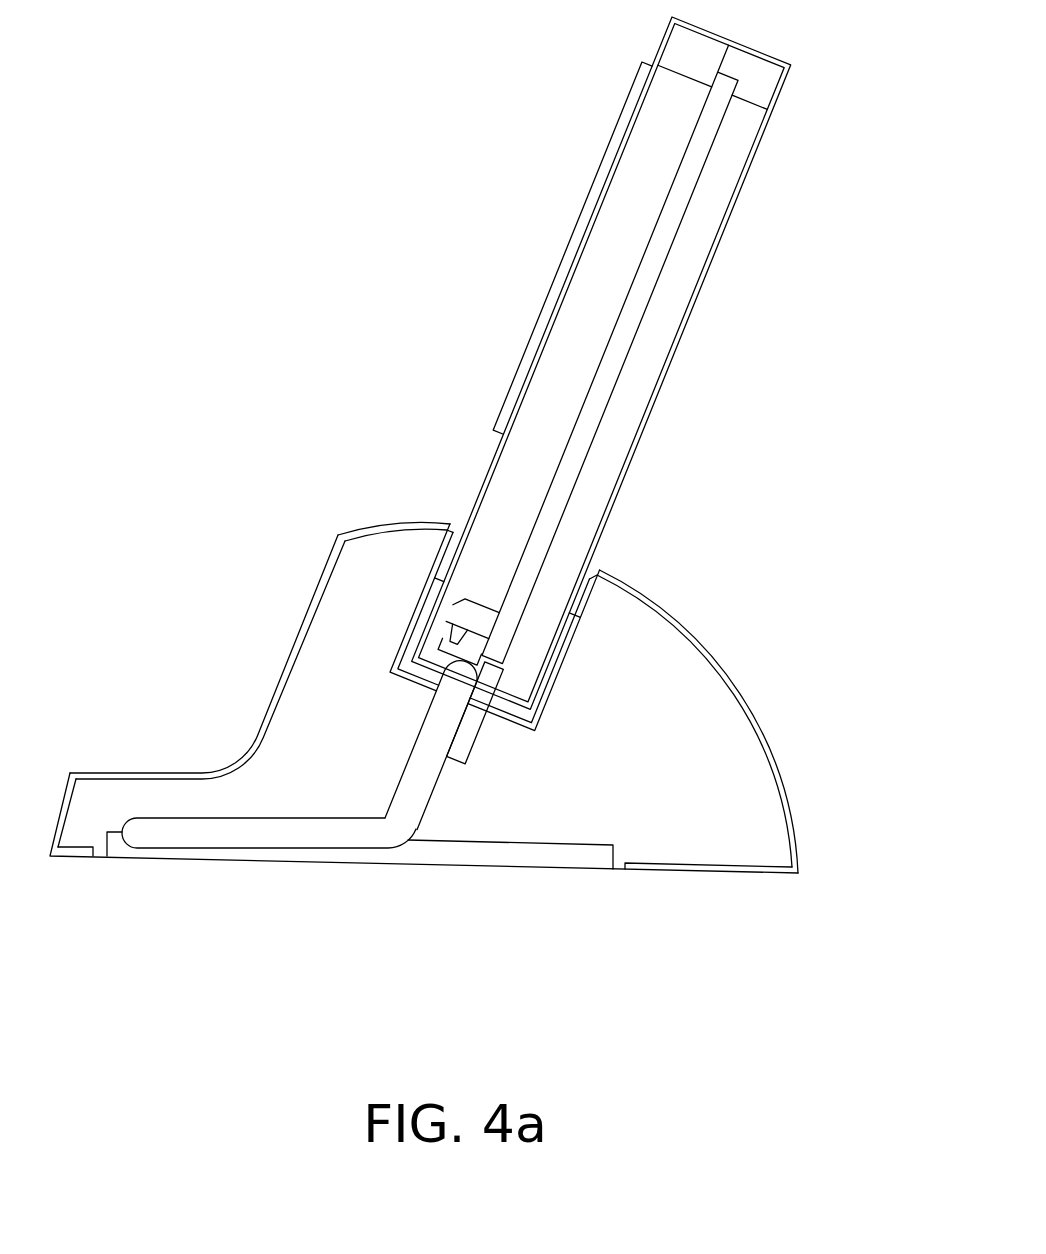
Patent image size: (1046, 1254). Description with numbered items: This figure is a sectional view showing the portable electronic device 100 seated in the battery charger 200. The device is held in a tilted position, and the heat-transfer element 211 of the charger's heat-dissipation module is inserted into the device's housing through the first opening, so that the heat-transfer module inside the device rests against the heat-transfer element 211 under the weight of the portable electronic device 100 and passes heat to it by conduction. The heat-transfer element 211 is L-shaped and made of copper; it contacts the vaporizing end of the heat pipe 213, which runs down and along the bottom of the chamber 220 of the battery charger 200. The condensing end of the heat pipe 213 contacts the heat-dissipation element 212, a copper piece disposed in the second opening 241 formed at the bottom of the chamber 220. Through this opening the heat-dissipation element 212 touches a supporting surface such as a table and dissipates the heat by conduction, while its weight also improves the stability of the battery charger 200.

The portable electronic device 100 is at (508, 361).
The battery charger 200 is at (477, 764).
The heat-transfer element 211 is at (450, 648).
The heat-dissipation element 212 is at (568, 862).
The heat pipe 213 is at (420, 752).
The chamber 220 is at (635, 650).
The second opening 241 is at (100, 854).